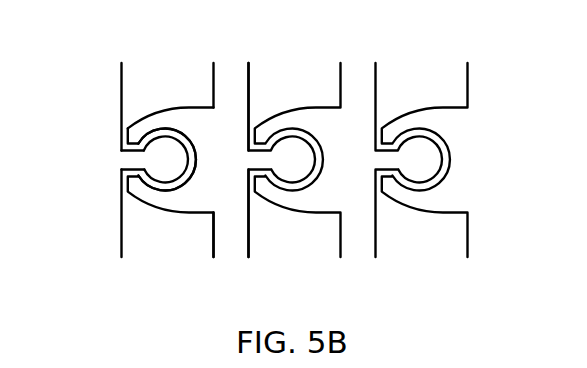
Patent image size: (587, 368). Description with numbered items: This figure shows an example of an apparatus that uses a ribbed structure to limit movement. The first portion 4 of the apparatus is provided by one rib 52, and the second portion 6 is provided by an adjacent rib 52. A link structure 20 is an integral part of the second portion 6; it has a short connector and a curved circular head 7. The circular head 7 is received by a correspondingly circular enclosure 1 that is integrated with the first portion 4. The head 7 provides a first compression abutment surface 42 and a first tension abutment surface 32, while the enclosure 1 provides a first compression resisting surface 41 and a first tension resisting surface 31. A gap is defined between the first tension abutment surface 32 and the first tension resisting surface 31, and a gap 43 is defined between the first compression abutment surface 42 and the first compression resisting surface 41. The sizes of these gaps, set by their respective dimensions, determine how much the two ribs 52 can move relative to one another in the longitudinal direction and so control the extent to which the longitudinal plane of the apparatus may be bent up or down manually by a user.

The enclosure 1 is at (156, 135).
The first portion 4 is at (230, 67).
The second portion 6 is at (105, 76).
The circular head 7 is at (191, 182).
The link structure 20 is at (124, 163).
The first tension resisting surface 31 is at (136, 132).
The first tension abutment surface 32 is at (158, 129).
The first compression resisting surface 41 is at (186, 184).
The first compression abutment surface 42 is at (195, 145).
The gap 43 is at (193, 172).
The rib 52 is at (102, 213).